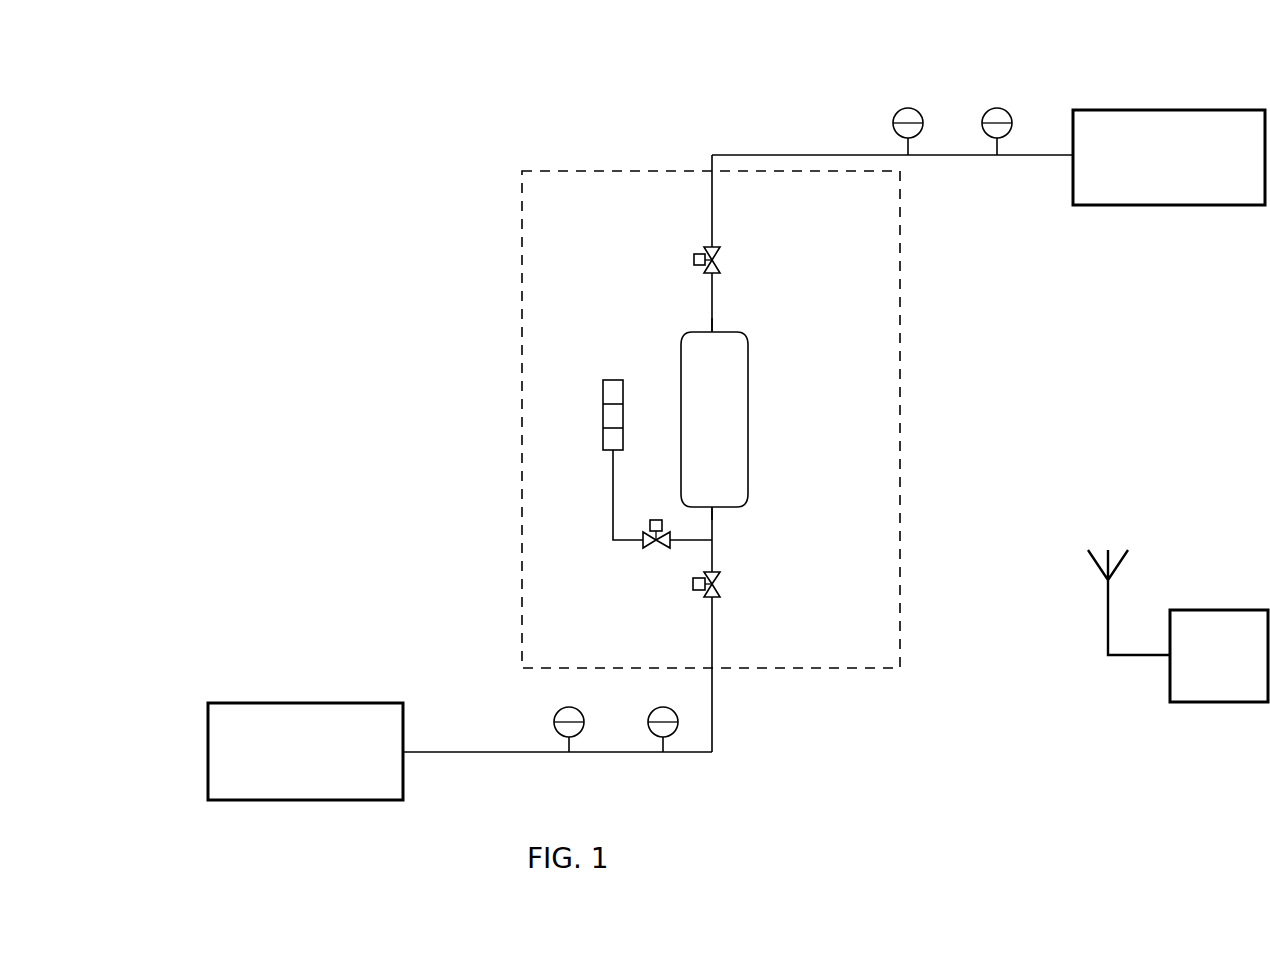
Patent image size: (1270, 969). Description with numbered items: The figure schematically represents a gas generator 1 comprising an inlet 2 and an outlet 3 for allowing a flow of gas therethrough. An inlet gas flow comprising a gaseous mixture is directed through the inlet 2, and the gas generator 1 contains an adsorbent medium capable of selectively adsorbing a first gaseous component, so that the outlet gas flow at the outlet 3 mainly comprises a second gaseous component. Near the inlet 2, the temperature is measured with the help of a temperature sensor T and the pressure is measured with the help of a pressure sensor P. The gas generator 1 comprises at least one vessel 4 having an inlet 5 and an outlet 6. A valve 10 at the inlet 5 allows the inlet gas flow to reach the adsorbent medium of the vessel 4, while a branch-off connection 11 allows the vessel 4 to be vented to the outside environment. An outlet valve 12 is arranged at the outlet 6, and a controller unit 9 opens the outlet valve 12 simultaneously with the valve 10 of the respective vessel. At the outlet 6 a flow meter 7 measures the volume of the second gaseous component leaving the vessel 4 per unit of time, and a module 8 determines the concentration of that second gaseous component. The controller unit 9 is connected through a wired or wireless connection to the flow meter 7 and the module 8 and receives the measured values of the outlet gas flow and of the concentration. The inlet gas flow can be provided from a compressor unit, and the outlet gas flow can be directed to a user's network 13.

The gas generator 1 is at (440, 302).
The inlet 2 is at (495, 745).
The outlet 3 is at (1012, 158).
The vessel 4 is at (750, 425).
The inlet 5 is at (715, 512).
The outlet 6 is at (715, 323).
The flow meter 7 is at (985, 107).
The module 8 is at (893, 112).
The controller unit 9 is at (1205, 710).
The valve 10 is at (725, 585).
The branch-off connection 11 is at (645, 522).
The outlet valve 12 is at (706, 248).
The user's network 13 is at (1140, 208).
The pressure sensor P is at (582, 735).
The temperature sensor T is at (678, 735).